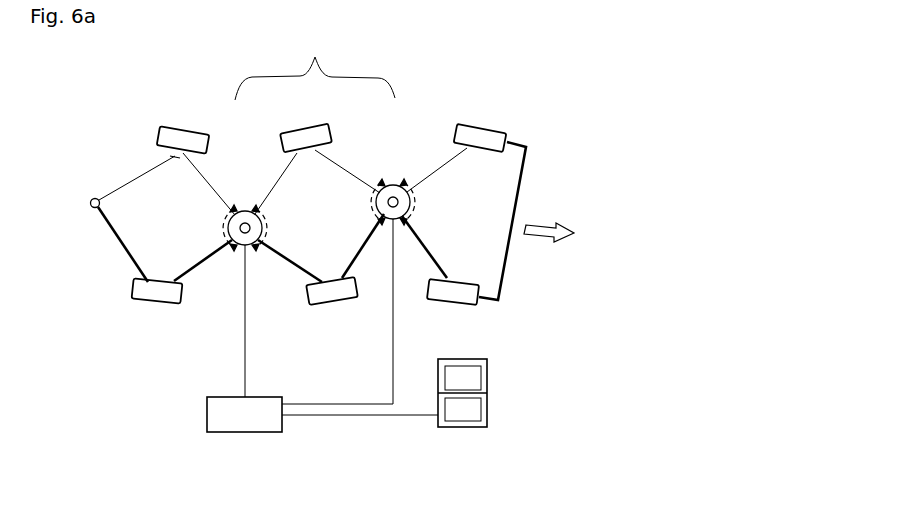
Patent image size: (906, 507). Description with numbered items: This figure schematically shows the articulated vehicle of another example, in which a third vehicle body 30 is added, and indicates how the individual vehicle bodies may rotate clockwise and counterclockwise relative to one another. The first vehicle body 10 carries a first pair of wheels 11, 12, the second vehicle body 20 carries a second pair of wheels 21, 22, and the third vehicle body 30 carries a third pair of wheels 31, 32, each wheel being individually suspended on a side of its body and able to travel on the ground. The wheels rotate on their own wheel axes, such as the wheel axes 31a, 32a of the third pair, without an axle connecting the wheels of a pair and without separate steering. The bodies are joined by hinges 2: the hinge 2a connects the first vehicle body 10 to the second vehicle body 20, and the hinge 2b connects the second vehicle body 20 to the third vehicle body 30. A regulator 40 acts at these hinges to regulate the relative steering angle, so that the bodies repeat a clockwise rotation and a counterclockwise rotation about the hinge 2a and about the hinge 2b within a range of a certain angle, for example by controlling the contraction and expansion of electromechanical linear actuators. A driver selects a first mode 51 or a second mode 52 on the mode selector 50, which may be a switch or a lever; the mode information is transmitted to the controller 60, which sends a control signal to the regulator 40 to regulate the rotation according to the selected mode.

The driving units 2 is at (315, 69).
The hinge 2a is at (393, 202).
The hinge 2b is at (245, 228).
The first vehicle body 10 is at (515, 170).
The wheel of first pair of wheels 11 is at (478, 168).
The wheel of first pair of wheels 12 is at (458, 272).
The second vehicle body 20 is at (292, 182).
The wheel of second pair of wheels 21 is at (310, 162).
The wheel of second pair of wheels 22 is at (328, 266).
The third vehicle body 30 is at (138, 190).
The wheel of third pair of wheels 31 is at (186, 162).
The wheel axis 31a is at (165, 157).
The wheel of third pair of wheels 32 is at (160, 265).
The wheel axis 32a is at (140, 278).
The regulator 40 is at (252, 244).
The mode selector 50 is at (455, 428).
The first mode 51 is at (482, 411).
The second mode 52 is at (482, 378).
The controller 60 is at (243, 432).